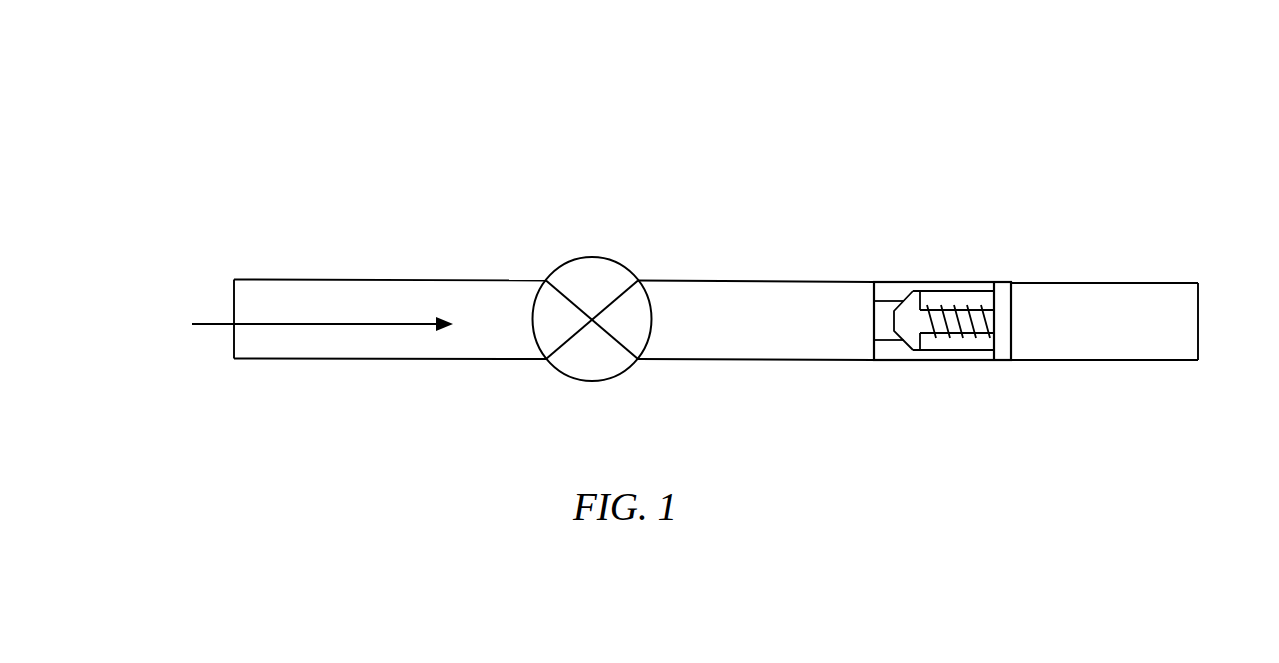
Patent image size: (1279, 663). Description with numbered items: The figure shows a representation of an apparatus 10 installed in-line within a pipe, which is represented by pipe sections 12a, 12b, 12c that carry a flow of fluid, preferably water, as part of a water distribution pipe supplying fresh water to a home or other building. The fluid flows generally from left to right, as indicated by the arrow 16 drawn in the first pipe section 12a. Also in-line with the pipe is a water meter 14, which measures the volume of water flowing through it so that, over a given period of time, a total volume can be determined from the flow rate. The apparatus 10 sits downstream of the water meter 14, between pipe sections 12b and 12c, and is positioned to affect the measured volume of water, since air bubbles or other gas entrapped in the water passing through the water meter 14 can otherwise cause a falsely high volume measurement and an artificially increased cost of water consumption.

The apparatus 10 is at (892, 281).
The pipe section 12a is at (442, 300).
The pipe section 12b is at (790, 302).
The pipe section 12c is at (1117, 323).
The water meter 14 is at (580, 293).
The arrow 16 is at (222, 320).